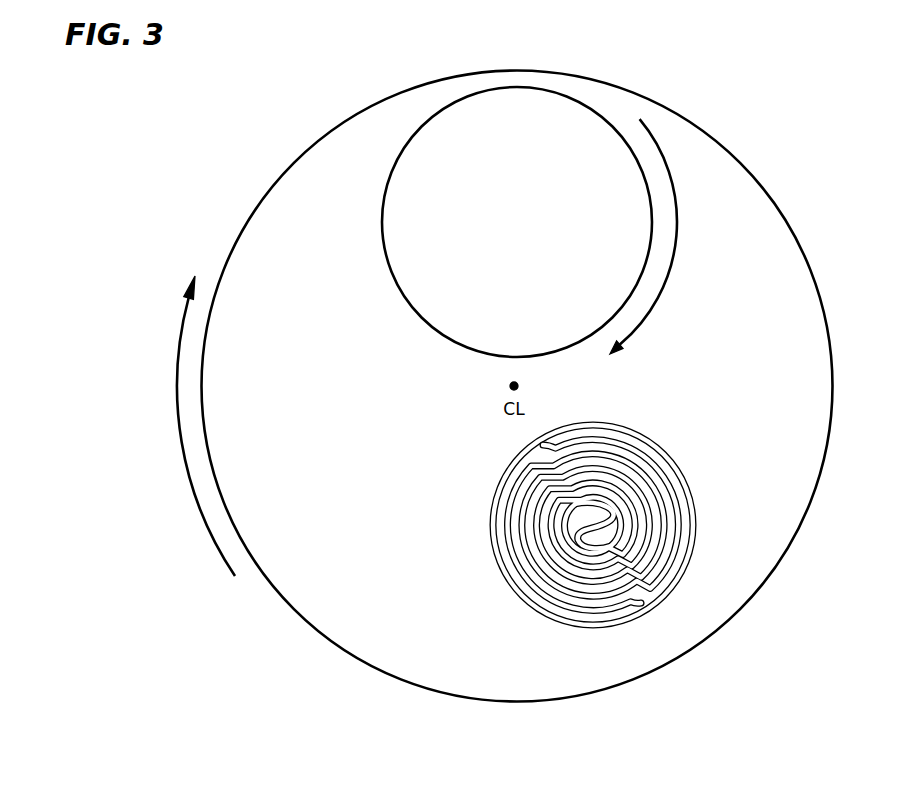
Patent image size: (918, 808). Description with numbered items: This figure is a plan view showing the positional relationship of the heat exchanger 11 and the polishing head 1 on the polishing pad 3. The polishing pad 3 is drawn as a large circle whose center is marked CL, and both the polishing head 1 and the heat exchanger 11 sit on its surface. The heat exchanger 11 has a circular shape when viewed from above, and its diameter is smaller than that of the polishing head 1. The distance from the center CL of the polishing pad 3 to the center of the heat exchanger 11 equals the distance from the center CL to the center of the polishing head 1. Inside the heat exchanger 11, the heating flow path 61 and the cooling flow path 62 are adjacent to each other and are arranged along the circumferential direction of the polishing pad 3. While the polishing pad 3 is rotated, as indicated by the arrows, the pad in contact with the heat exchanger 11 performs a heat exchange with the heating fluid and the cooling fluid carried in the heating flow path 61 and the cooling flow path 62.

The polishing head 1 is at (406, 302).
The polishing pad 3 is at (260, 246).
The heat exchanger 11 is at (667, 438).
The heating flow path 61 is at (674, 484).
The cooling flow path 62 is at (509, 560).